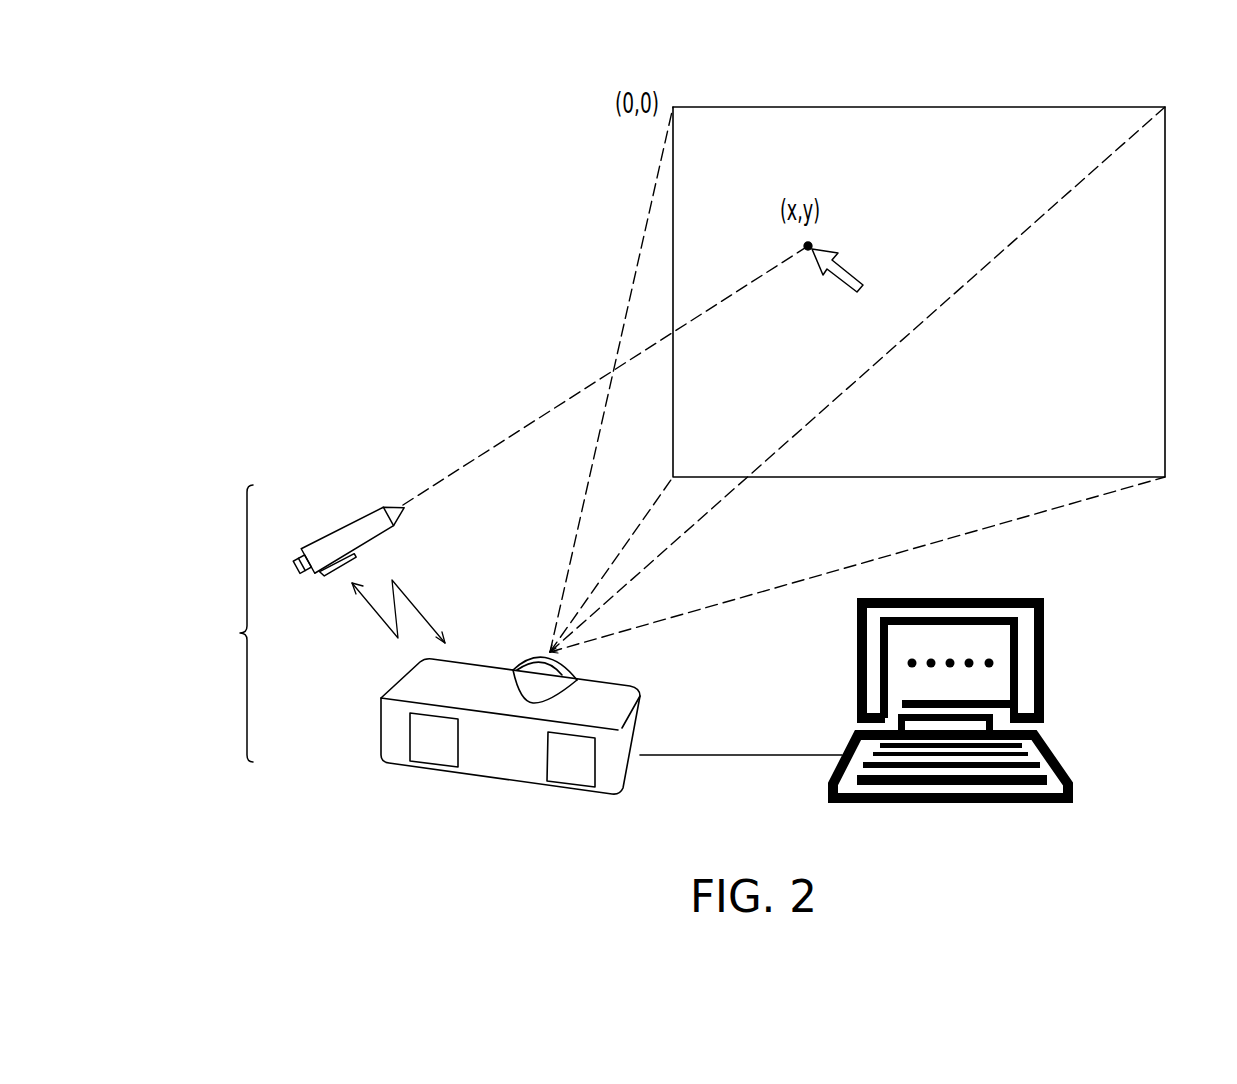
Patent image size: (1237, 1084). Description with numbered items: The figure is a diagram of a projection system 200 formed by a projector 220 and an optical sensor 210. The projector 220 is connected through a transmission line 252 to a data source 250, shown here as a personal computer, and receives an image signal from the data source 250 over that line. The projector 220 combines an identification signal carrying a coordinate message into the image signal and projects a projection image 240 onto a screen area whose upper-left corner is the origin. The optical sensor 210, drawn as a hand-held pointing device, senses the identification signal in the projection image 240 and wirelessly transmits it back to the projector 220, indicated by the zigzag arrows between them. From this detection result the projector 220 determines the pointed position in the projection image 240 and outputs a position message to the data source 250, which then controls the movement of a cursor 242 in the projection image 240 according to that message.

The projection system 200 is at (225, 623).
The optical sensor 210 is at (365, 533).
The projector 220 is at (505, 762).
The projection image 240 is at (1165, 302).
The cursor 242 is at (842, 280).
The data source 250 is at (1044, 677).
The transmission line 252 is at (697, 755).